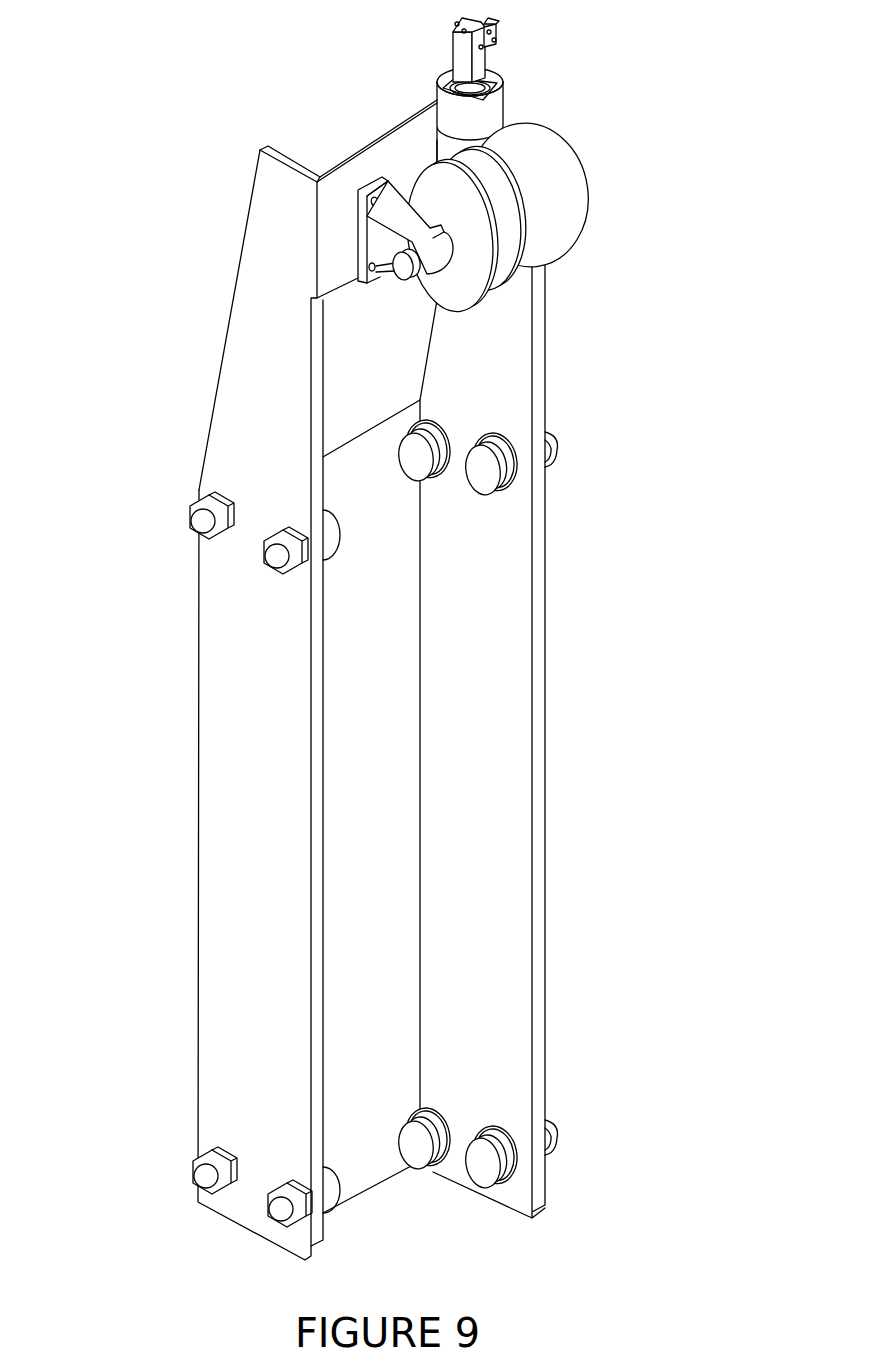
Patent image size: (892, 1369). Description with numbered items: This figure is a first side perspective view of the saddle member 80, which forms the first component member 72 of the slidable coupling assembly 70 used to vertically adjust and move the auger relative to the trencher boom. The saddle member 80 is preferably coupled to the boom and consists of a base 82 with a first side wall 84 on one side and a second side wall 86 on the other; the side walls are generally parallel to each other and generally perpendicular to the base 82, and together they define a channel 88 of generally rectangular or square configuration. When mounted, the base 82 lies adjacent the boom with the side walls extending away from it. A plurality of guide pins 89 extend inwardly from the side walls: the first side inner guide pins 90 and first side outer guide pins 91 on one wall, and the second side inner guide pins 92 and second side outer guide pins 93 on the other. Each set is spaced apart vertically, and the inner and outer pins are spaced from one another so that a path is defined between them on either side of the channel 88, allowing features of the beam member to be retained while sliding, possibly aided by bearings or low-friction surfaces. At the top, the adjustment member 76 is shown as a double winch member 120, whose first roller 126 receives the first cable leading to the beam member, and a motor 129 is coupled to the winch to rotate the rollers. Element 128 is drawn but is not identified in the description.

The slidable coupling assembly 70 is at (411, 639).
The first component member 72 is at (219, 703).
The adjustment member 76 is at (588, 152).
The saddle member 80 is at (213, 296).
The base 82 is at (400, 680).
The first side wall 84 is at (204, 848).
The second side wall 86 is at (522, 588).
The channel 88 is at (364, 680).
The guide pins 89 is at (510, 462).
The first side inner guide pins 90 is at (191, 520).
The first side outer guide pins 91 is at (266, 562).
The second side inner guide pins 92 is at (445, 437).
The second side outer guide pins 93 is at (532, 790).
The double winch member 120 is at (482, 167).
The first roller 126 is at (542, 268).
The sheave 128 is at (408, 168).
The motor 129 is at (441, 80).